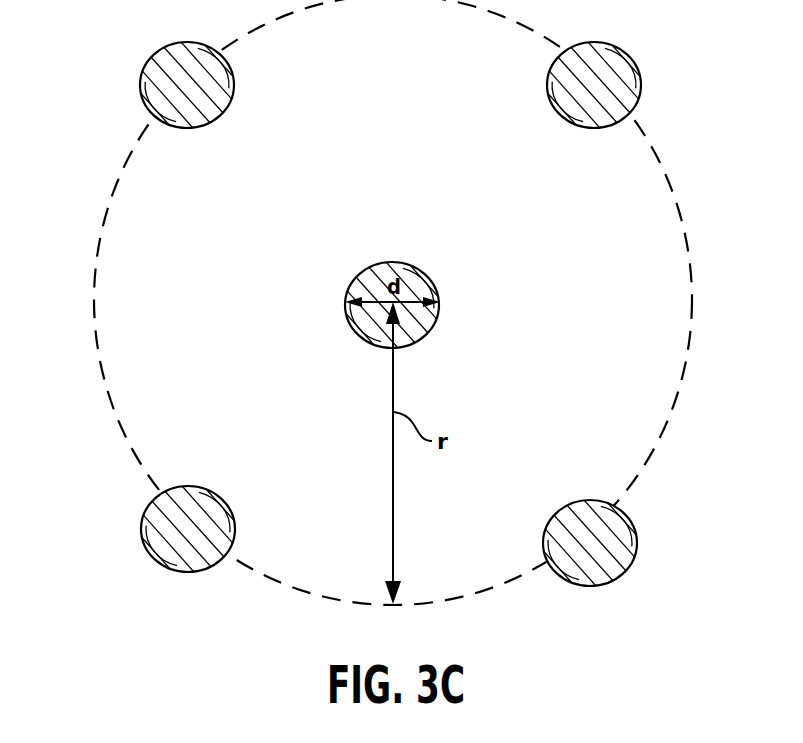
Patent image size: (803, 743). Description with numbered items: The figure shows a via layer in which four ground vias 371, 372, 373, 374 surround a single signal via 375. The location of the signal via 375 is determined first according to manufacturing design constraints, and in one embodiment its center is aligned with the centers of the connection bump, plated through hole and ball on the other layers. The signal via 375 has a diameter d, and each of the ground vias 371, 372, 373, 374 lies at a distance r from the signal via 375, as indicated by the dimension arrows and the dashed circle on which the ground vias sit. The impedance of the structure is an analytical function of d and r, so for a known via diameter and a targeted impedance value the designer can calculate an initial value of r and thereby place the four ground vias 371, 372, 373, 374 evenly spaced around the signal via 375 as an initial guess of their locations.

The ground via 371 is at (146, 86).
The ground via 372 is at (637, 84).
The ground via 373 is at (174, 558).
The ground via 374 is at (600, 574).
The signal via 375 is at (361, 284).